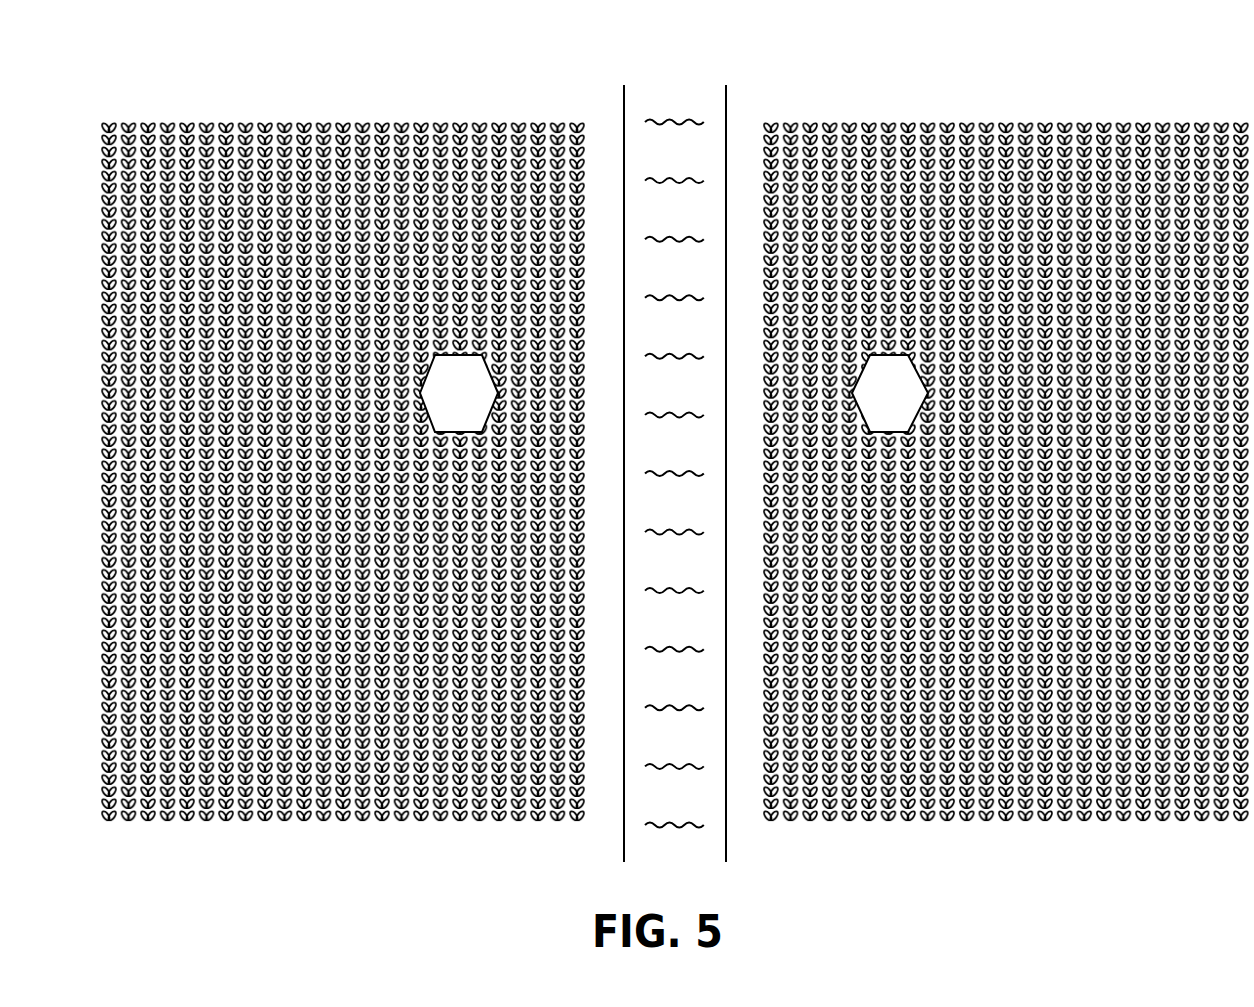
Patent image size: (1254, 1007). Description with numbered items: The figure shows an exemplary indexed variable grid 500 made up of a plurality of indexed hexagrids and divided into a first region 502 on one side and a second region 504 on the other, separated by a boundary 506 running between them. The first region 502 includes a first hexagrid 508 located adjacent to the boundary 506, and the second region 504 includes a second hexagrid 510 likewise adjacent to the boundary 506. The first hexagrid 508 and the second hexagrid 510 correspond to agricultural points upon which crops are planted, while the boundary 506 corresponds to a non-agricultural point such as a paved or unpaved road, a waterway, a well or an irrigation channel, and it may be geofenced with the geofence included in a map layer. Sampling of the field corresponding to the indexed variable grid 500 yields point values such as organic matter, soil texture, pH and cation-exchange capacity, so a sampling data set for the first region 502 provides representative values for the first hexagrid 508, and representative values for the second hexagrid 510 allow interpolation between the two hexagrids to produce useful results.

The indexed variable grid 500 is at (152, 57).
The first region 502 is at (322, 108).
The second region 504 is at (973, 108).
The boundary 506 is at (728, 120).
The first hexagrid 508 is at (492, 380).
The second hexagrid 510 is at (858, 382).